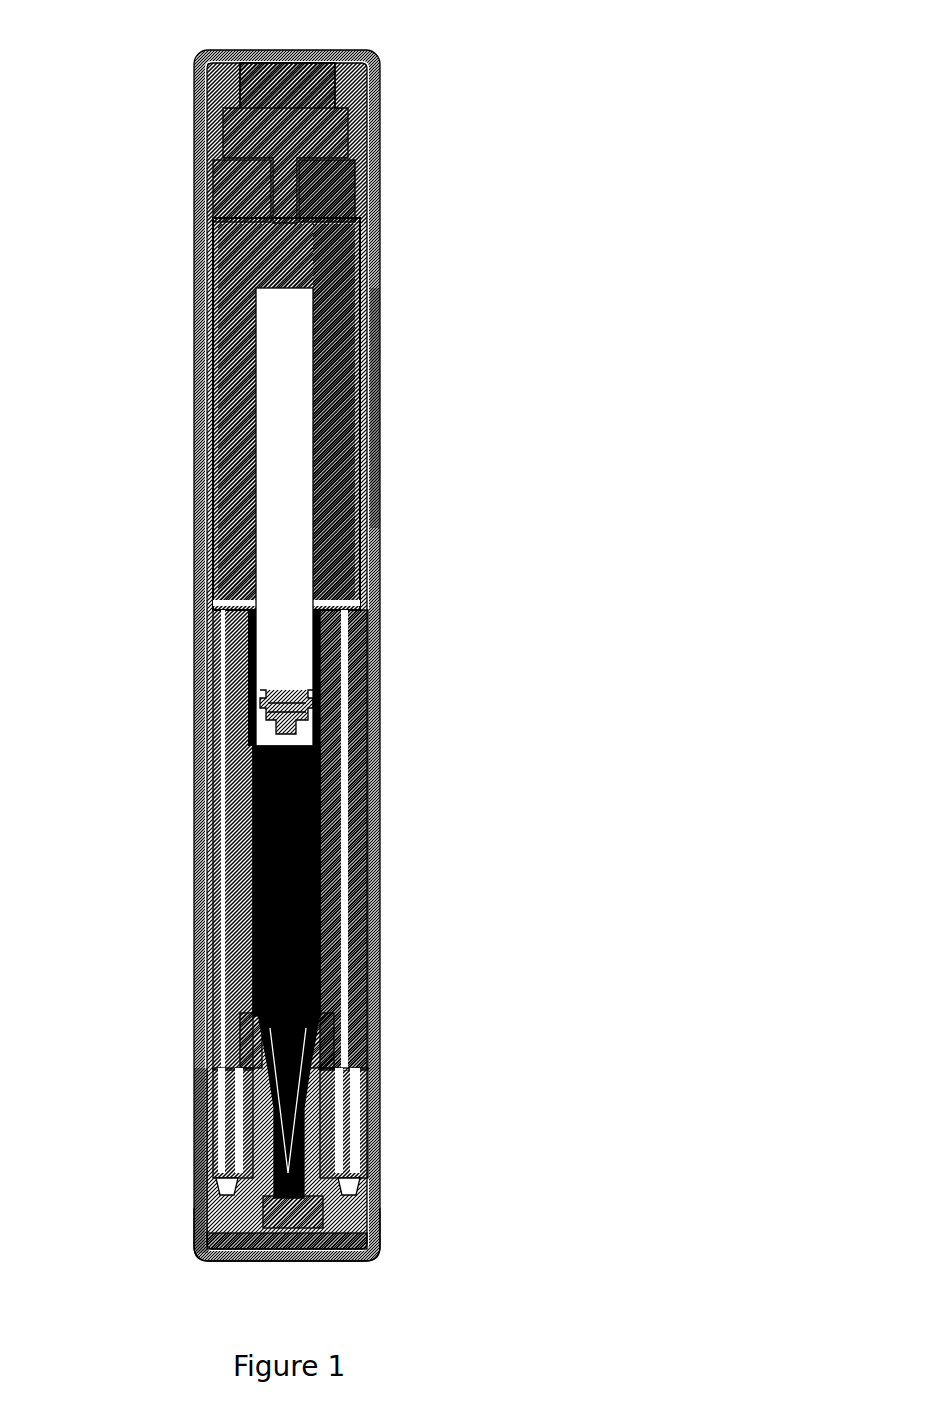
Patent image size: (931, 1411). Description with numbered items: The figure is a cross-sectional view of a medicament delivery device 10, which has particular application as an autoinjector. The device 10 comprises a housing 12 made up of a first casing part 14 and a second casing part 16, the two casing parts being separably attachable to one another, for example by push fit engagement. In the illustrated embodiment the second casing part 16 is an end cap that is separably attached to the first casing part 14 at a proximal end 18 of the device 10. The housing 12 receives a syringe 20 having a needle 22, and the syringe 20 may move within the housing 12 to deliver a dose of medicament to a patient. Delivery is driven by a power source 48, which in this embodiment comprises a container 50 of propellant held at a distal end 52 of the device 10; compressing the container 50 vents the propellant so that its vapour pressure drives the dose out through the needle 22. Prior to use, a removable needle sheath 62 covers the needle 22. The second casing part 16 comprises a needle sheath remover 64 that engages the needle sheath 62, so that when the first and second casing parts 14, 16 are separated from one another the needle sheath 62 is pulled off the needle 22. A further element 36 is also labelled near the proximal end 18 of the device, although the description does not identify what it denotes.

The medicament delivery device 10 is at (355, 677).
The housing 12 is at (323, 655).
The first casing part 14 is at (372, 410).
The second casing part 16 is at (188, 1148).
The proximal end 18 is at (430, 1266).
The syringe 20 is at (318, 978).
The needle 22 is at (290, 1152).
The needle shield 36 is at (197, 1205).
The power source 48 is at (348, 114).
The container 50 is at (325, 75).
The distal end 52 is at (247, 126).
The needle sheath 62 is at (305, 1193).
The needle sheath remover 64 is at (220, 1130).